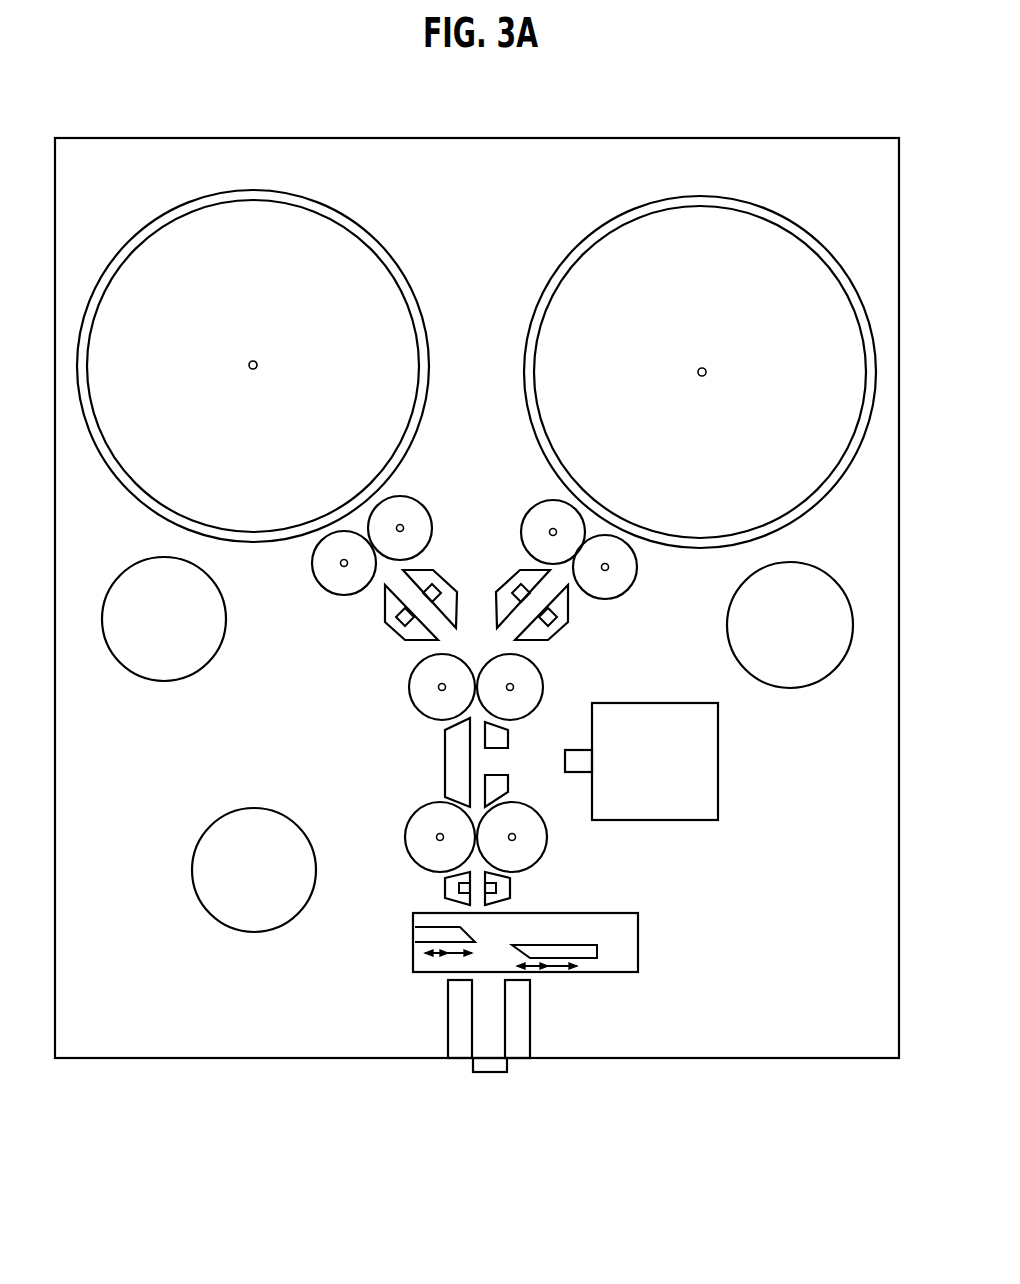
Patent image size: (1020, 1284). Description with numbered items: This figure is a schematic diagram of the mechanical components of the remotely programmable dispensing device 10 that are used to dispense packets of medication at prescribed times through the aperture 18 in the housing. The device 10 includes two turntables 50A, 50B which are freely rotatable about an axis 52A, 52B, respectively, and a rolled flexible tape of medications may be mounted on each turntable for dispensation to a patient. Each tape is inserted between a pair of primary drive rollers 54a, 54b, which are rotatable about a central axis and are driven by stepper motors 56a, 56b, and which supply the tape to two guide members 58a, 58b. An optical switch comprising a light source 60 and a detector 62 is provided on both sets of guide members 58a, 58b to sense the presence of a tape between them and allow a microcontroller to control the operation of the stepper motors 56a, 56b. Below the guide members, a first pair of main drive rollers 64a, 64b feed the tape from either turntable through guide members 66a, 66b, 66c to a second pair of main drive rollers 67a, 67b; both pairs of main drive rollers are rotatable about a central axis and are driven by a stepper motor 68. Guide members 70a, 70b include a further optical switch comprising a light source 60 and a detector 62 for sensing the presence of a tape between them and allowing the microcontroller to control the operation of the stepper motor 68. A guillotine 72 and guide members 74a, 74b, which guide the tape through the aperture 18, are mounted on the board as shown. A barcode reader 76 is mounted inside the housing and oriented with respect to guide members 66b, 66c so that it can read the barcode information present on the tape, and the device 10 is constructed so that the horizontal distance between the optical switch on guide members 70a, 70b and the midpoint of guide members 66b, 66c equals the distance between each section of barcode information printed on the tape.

The remotely programmable dispensing device 10 is at (127, 124).
The aperture 18 is at (490, 1072).
The turntable 50A is at (185, 240).
The turntable 50B is at (777, 250).
The axis 52A is at (253, 369).
The axis 52B is at (702, 376).
The primary drive roller 54a is at (320, 558).
The primary drive roller 54b is at (417, 508).
The stepper motor 56a is at (158, 567).
The stepper motor 56b is at (817, 567).
The guide member 58a is at (385, 602).
The guide member 58b is at (520, 573).
The light source 60 is at (395, 622).
The detector 62 is at (514, 590).
The main drive roller 64a is at (420, 695).
The main drive roller 64b is at (537, 681).
The guide member 66a is at (446, 750).
The guide member 66b is at (508, 741).
The guide member 66c is at (510, 787).
The main drive roller 67a is at (418, 815).
The main drive roller 67b is at (547, 833).
The stepper motor 68 is at (222, 822).
The guide member 70a is at (445, 891).
The guide member 70b is at (510, 895).
The guillotine 72 is at (640, 943).
The guide member 74a is at (450, 1030).
The guide member 74b is at (530, 1028).
The barcode reader 76 is at (708, 776).